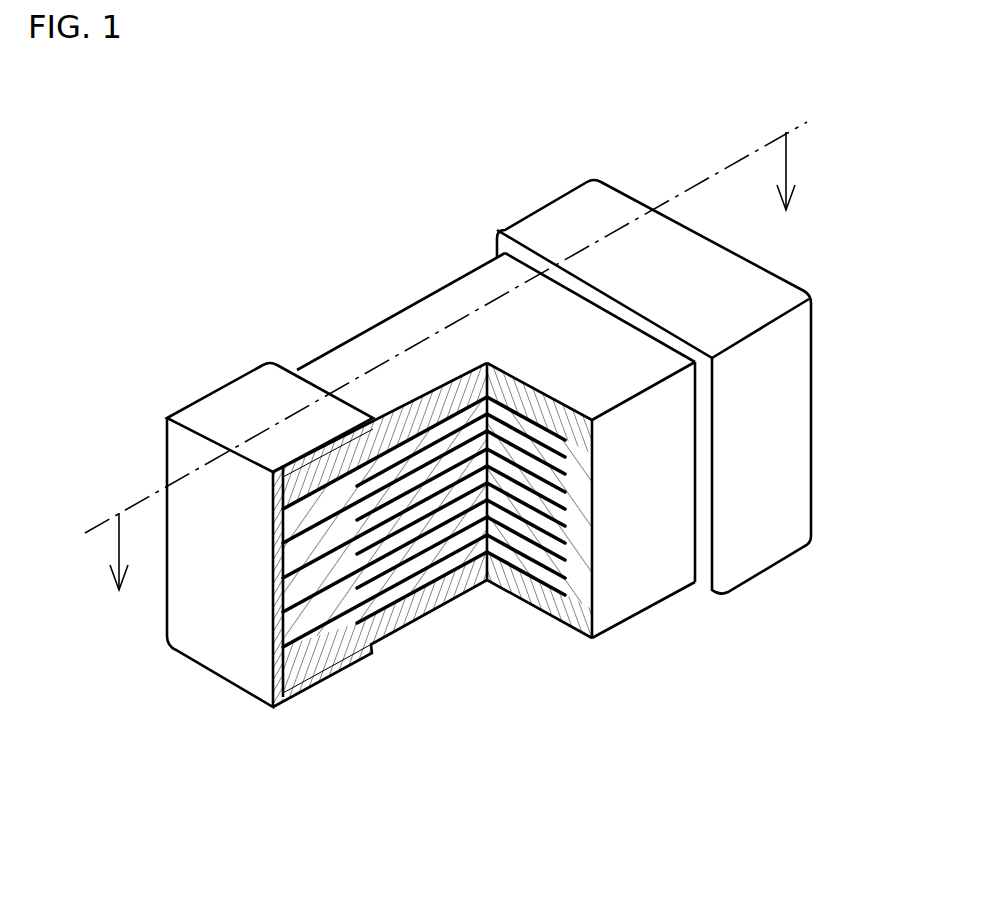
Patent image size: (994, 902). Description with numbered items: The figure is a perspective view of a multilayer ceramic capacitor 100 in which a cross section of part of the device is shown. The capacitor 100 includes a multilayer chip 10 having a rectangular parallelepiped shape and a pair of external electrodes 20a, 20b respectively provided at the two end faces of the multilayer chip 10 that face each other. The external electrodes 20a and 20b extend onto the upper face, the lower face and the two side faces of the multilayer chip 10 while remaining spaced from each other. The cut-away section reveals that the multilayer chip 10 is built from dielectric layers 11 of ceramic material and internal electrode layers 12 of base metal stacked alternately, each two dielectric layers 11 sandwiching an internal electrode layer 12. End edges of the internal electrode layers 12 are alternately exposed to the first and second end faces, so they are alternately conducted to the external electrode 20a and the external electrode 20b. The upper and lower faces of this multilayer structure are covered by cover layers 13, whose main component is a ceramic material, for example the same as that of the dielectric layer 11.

The multilayer ceramic capacitor 100 is at (922, 106).
The multilayer chip 10 is at (318, 352).
The dielectric layer 11 is at (412, 567).
The internal electrode layer 12 is at (380, 593).
The cover layer 13 is at (457, 300).
The external electrode 20a is at (205, 400).
The external electrode 20b is at (548, 216).